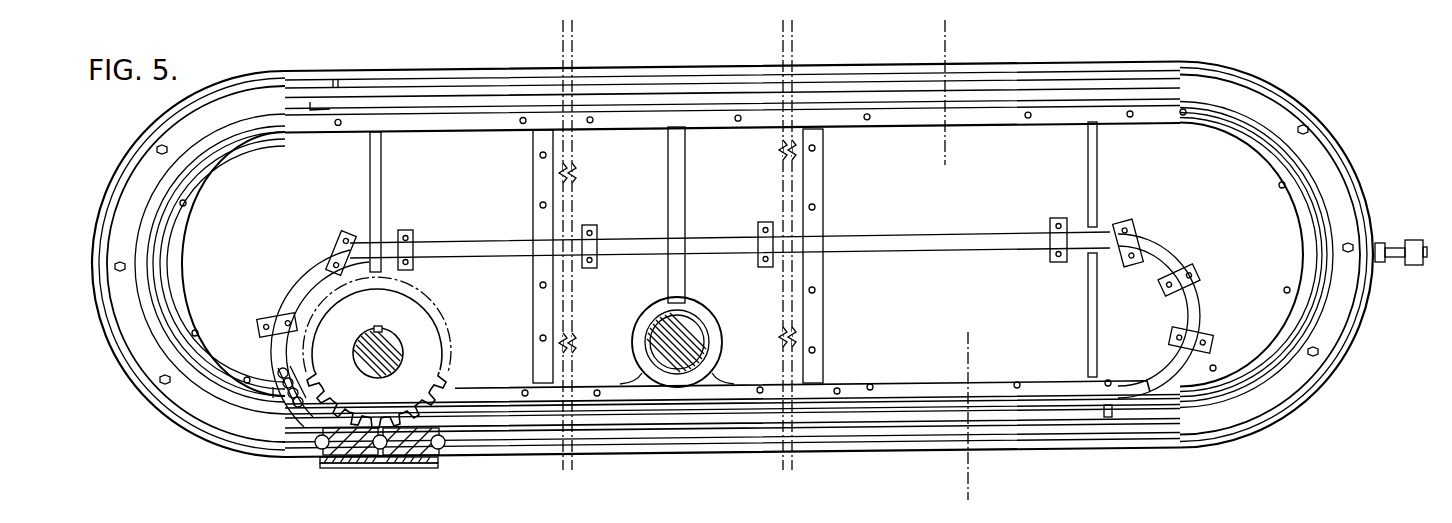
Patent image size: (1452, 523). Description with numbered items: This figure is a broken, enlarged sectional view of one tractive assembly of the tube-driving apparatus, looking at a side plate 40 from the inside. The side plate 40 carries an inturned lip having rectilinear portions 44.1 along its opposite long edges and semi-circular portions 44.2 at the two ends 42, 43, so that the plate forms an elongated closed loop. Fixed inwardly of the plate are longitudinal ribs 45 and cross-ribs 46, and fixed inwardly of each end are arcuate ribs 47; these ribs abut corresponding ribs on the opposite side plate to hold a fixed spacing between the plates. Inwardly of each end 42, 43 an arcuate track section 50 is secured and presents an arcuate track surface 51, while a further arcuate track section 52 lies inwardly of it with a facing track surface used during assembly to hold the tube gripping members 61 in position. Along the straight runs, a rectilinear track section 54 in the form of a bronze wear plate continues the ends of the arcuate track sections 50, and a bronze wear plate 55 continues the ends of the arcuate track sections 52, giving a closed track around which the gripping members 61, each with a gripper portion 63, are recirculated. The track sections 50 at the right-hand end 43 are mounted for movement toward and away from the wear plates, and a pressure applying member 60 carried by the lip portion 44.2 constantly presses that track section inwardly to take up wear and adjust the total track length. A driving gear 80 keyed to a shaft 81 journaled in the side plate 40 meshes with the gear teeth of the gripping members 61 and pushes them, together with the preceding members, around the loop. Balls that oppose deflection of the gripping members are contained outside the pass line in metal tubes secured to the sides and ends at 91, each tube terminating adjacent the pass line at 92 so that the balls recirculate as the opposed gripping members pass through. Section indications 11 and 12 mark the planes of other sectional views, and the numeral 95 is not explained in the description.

The side plate 40 is at (1062, 68).
The end 42 is at (119, 168).
The end 43 is at (1335, 128).
The rectilinear portions 44.1 is at (848, 82).
The semi-circular portions 44.2 is at (108, 215).
The longitudinal ribs 45 is at (1008, 125).
The cross-ribs 46 is at (540, 190).
The arcuate ribs 47 is at (176, 240).
The arcuate track section 50 is at (118, 292).
The arcuate track surface 51 is at (150, 330).
The arcuate track section 52 is at (165, 282).
The rectilinear track section 54 is at (635, 78).
The bronze wear plate 55 is at (487, 100).
The pressure applying member 60 is at (1402, 273).
The tube gripping members 61 is at (401, 477).
The gripper portion 63 is at (322, 474).
The driving gear 80 is at (440, 345).
The shaft 81 is at (395, 350).
The tube securement 91 is at (592, 225).
The tube end 92 is at (1108, 418).
The support 95 is at (1255, 522).
The section line 11- 11 is at (936, 31).
The section line 12- 12 is at (959, 348).